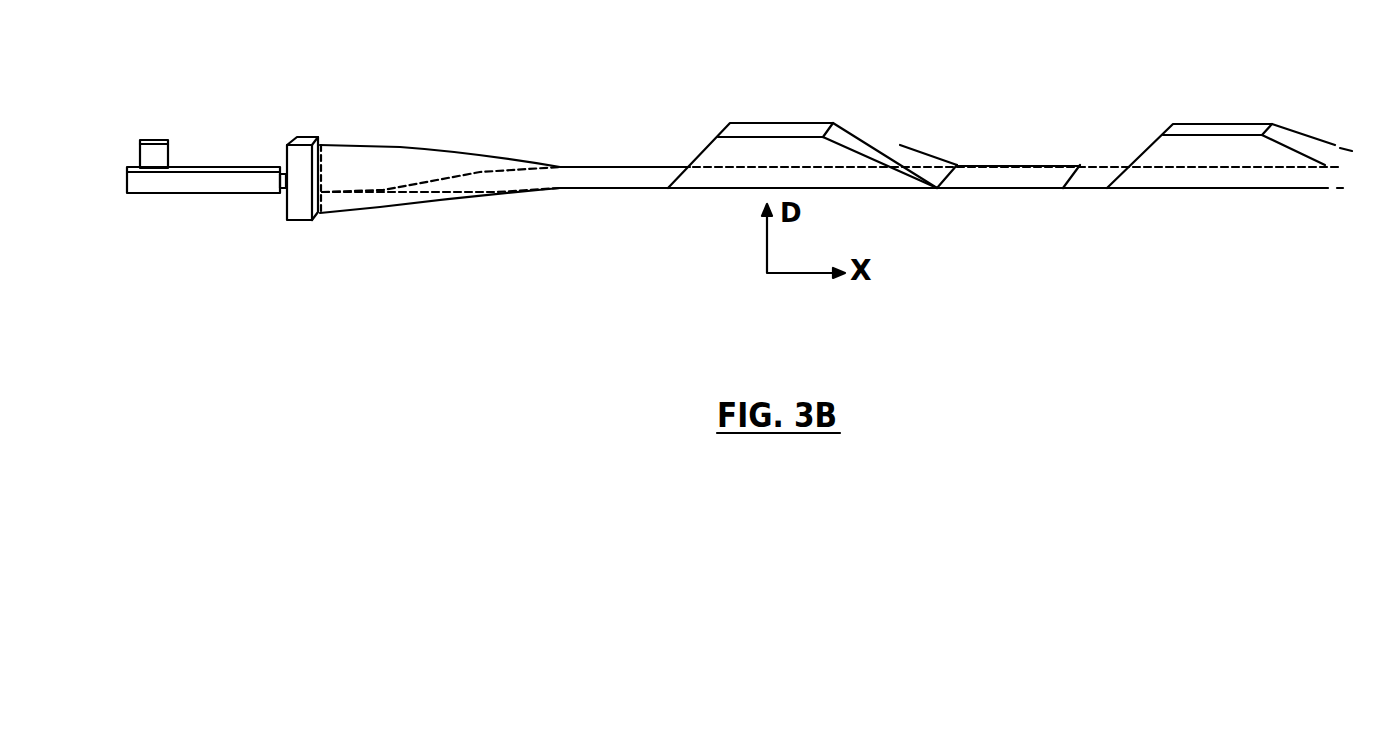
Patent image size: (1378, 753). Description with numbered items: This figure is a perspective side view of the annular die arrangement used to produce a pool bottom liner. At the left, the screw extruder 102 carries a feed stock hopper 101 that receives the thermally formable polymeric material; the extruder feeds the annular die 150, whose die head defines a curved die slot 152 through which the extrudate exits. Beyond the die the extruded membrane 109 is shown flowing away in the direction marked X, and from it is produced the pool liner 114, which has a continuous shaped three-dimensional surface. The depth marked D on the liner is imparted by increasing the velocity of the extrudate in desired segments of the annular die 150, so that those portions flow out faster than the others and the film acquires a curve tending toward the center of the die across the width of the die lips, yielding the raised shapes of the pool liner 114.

The feed stock hopper 101 is at (152, 139).
The screw extruder 102 is at (210, 166).
The tapered waveguide 109 is at (383, 143).
The pool bottom liner 114 is at (796, 107).
The annular die 150 is at (302, 137).
The curved die slot 152 is at (318, 221).